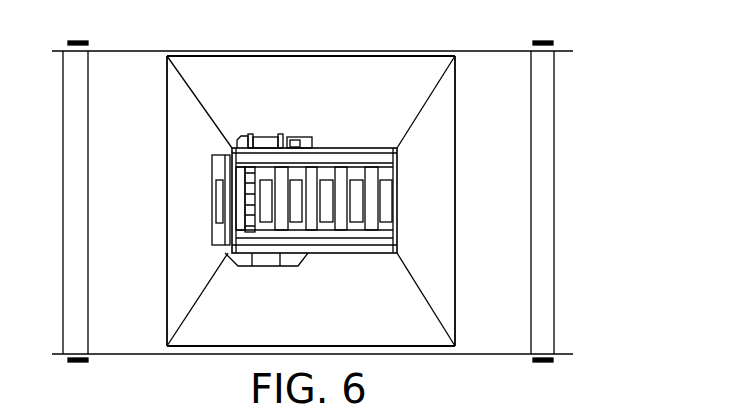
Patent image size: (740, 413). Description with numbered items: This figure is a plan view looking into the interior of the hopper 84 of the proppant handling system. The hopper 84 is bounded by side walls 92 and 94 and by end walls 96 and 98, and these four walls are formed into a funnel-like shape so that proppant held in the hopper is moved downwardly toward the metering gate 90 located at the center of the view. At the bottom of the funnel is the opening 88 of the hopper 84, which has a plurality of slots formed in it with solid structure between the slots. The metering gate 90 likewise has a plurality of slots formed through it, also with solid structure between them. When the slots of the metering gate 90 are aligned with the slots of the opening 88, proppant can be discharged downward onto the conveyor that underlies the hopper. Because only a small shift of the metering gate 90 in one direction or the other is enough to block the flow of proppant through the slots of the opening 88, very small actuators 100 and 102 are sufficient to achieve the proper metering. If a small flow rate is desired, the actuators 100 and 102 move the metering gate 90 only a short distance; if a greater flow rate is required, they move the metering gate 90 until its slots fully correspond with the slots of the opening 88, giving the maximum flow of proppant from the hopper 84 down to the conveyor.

The hopper 84 is at (315, 72).
The opening 88 is at (363, 252).
The metering gate 90 is at (333, 163).
The side wall 92 is at (249, 106).
The side wall 94 is at (299, 328).
The end wall 96 is at (182, 203).
The end wall 98 is at (442, 187).
The actuator 100 is at (267, 137).
The actuator 102 is at (257, 268).